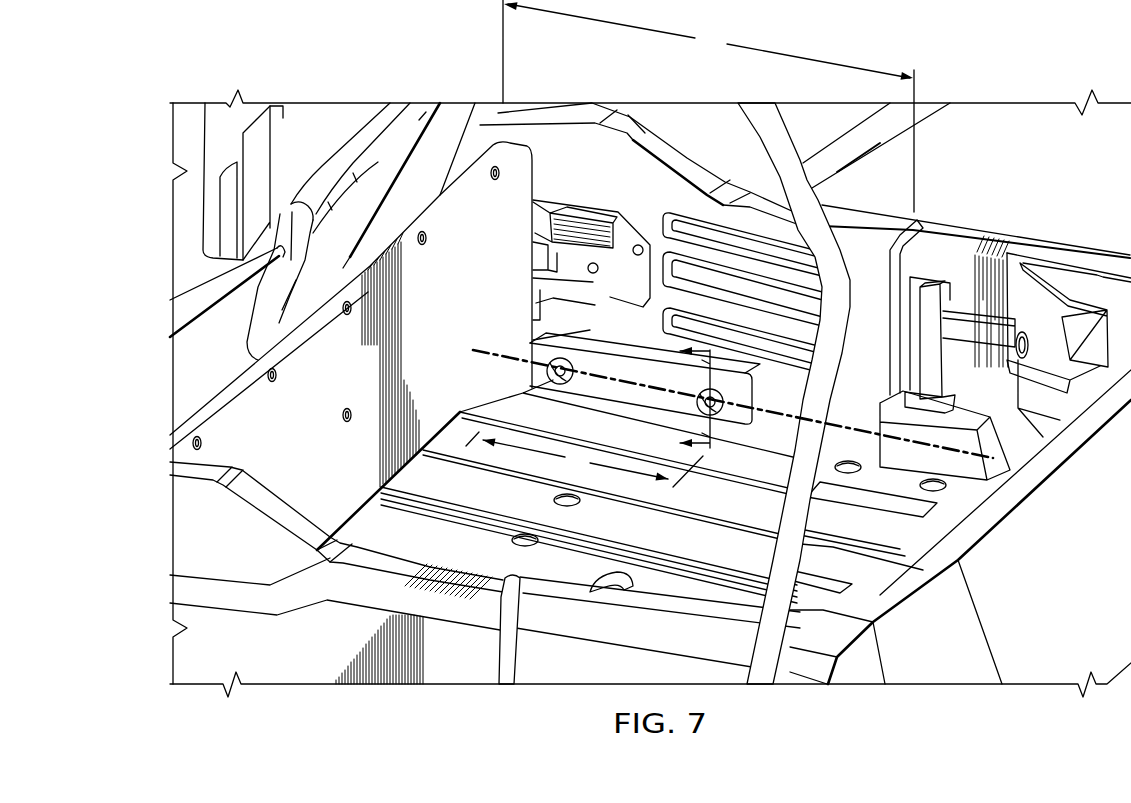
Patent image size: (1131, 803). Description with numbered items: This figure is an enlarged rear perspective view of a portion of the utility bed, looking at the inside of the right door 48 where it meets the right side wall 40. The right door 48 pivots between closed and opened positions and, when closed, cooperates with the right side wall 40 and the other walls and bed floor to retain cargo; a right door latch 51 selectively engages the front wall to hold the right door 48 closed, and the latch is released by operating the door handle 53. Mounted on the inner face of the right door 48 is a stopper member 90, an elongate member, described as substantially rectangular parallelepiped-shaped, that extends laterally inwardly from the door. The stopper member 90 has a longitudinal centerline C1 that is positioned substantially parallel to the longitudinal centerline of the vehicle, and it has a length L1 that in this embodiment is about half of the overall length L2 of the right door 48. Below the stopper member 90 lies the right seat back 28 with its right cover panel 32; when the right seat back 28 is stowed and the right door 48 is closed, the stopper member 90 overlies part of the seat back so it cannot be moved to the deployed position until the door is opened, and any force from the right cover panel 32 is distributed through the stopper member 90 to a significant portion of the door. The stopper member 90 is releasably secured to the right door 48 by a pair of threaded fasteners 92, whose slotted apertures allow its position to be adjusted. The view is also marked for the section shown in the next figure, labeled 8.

The right door 48 is at (700, 166).
The right side wall 40 is at (1063, 258).
The door handle 53 is at (573, 230).
The right door latch 51 is at (548, 254).
The stopper member 90 is at (646, 286).
The right seat back 28 is at (441, 421).
The right cover panel 32 is at (490, 405).
The threaded fasteners 92 is at (559, 385).
The bracket width reference 8 is at (686, 396).
The longitudinal centerline C1 is at (484, 338).
The length L1 is at (584, 459).
The overall length L2 is at (708, 106).